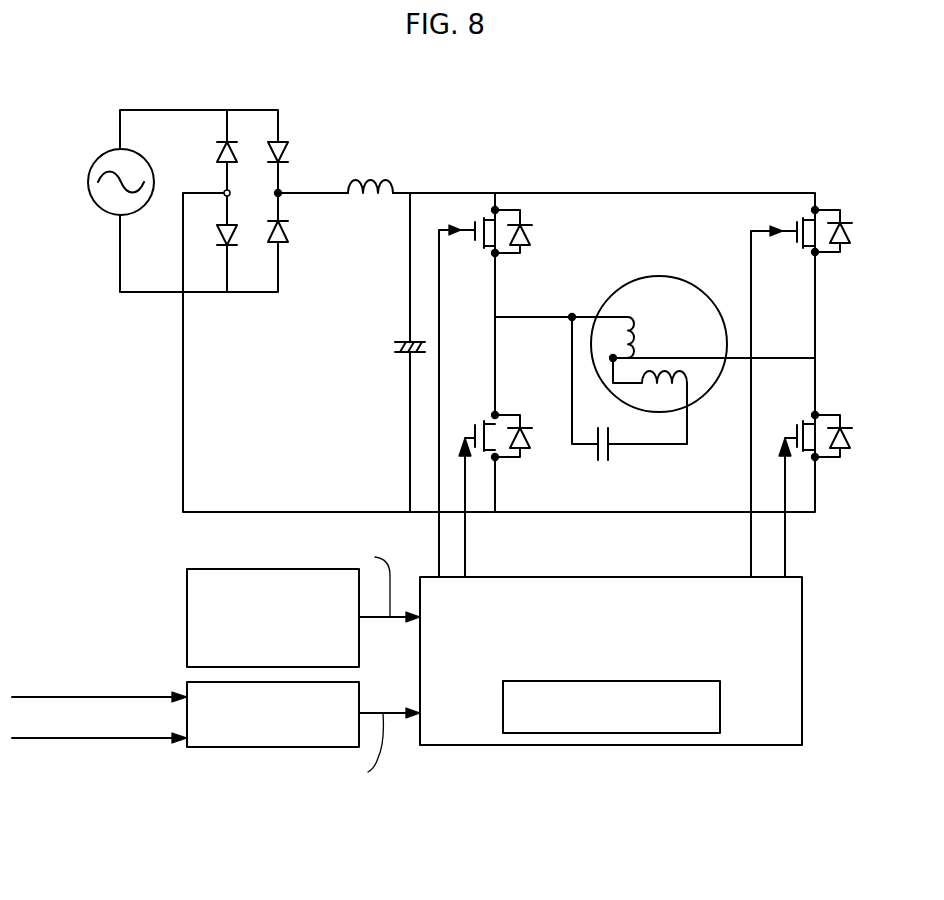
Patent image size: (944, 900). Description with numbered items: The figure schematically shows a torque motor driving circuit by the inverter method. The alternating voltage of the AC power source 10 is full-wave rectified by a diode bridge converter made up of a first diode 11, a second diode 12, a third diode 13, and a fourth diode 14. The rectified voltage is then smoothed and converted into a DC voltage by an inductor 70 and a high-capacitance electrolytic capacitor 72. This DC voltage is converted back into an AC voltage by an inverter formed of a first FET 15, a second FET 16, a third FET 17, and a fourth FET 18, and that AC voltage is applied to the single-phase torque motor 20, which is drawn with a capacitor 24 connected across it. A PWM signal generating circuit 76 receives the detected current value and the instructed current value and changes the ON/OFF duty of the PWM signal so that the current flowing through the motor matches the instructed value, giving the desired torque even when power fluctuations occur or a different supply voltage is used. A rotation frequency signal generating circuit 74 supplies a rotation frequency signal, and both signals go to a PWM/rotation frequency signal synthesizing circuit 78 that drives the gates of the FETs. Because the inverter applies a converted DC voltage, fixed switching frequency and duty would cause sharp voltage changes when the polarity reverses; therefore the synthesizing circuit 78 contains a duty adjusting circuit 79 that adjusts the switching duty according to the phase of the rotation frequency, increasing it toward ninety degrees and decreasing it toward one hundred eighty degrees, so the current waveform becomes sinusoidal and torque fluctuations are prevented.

The AC power source 10 is at (100, 212).
The first diode 11 is at (293, 165).
The second diode 12 is at (292, 242).
The third diode 13 is at (214, 154).
The fourth diode 14 is at (212, 246).
The first FET 15 is at (535, 244).
The second FET 16 is at (540, 450).
The third FET 17 is at (850, 242).
The fourth FET 18 is at (850, 448).
The single-phase torque motor 20 is at (658, 274).
The capacitor 24 is at (610, 455).
The inductor 70 is at (383, 175).
The high-capacitance electrolytic capacitor 72 is at (382, 348).
The rotation frequency signal generating circuit 74 is at (187, 620).
The PWM signal generating circuit 76 is at (238, 747).
The PWM/rotation frequency signal synthesizing circuit 78 is at (802, 663).
The duty adjusting circuit 79 is at (720, 705).